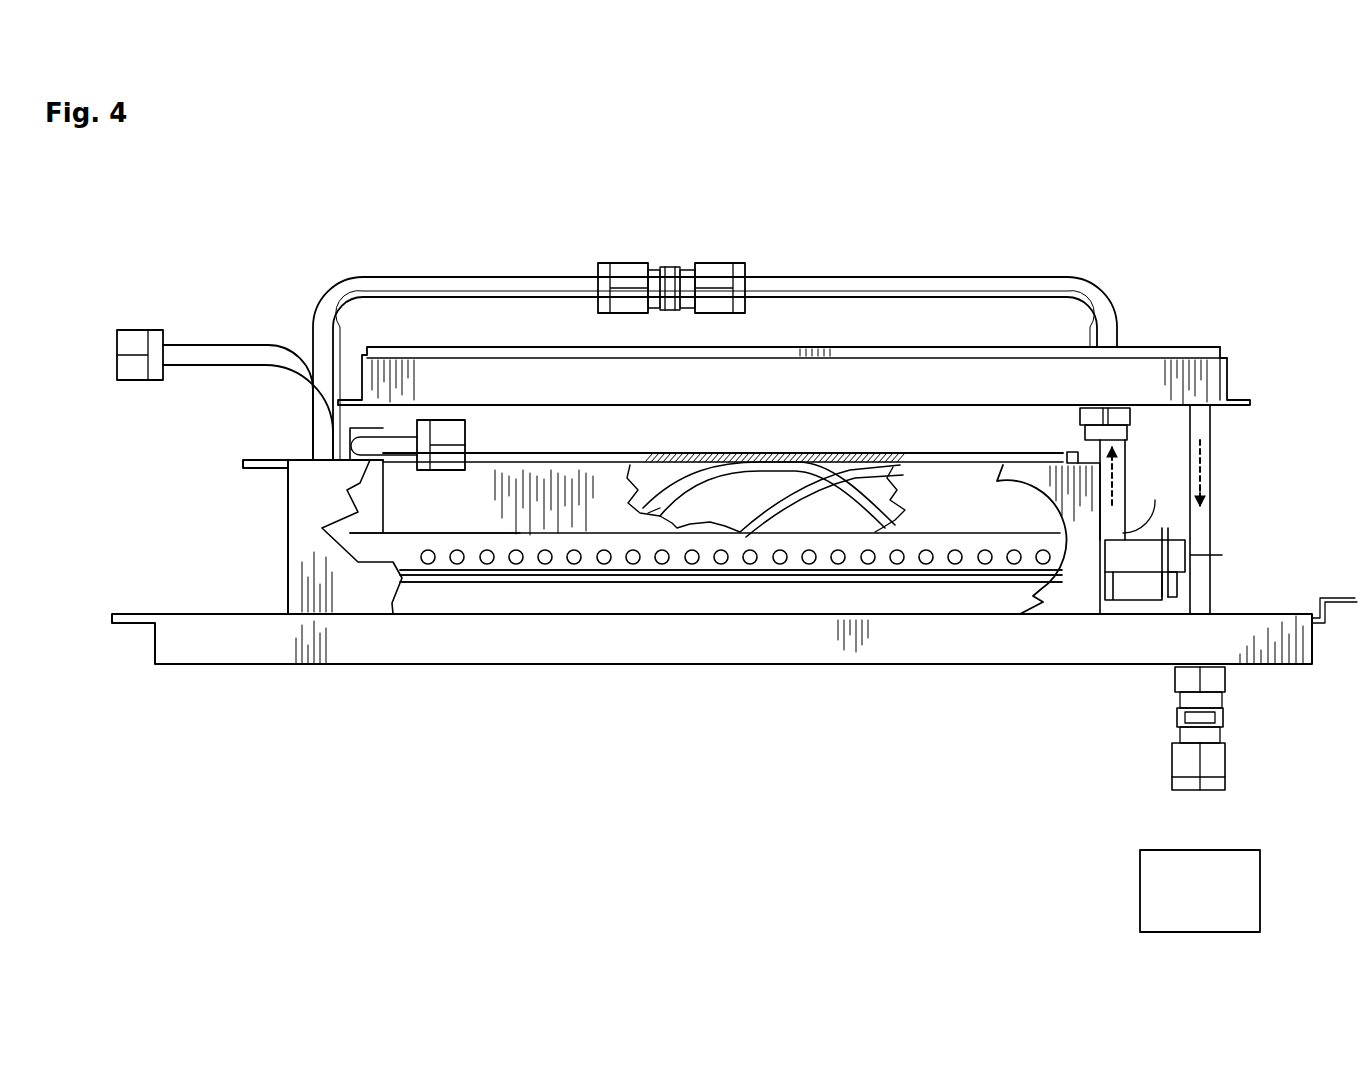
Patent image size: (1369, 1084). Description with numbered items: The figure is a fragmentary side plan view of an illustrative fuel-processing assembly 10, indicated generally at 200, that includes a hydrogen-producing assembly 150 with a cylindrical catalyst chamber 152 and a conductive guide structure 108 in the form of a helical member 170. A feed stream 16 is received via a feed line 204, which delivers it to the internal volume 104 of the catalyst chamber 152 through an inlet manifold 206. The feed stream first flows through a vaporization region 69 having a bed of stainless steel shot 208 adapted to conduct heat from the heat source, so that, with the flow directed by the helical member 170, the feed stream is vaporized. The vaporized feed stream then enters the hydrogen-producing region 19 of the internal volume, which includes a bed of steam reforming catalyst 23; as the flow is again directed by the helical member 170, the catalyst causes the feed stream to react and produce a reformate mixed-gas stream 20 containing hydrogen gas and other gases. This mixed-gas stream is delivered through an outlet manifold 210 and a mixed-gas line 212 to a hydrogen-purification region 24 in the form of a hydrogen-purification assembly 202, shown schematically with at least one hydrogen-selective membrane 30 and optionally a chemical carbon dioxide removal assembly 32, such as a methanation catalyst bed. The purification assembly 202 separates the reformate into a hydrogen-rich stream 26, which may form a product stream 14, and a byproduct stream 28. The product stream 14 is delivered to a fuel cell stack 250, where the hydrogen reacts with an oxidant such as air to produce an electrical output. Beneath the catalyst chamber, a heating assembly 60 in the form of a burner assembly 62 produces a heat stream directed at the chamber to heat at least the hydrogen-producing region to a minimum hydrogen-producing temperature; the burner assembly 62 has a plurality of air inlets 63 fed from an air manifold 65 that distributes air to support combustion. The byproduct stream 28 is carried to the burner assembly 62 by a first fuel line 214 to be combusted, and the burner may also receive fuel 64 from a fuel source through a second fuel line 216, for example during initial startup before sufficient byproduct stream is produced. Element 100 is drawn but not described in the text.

The fuel-processing assembly 10 is at (1155, 106).
The fuel-processing assembly 200 is at (1062, 136).
The heater assembly 100 is at (1018, 199).
The hydrogen-producing assembly 150 is at (938, 214).
The first fuel line 214 is at (497, 277).
The second fuel line 216 is at (227, 344).
The fuel 64 is at (108, 355).
The byproduct stream 28 is at (830, 289).
The hydrogen-selective membrane 30 is at (883, 372).
The hydrogen-purification assembly 202 is at (1137, 346).
The hydrogen-purification region 24 is at (1192, 340).
The chemical carbon dioxide removal assembly 32 is at (1212, 395).
The hydrogen-rich stream 26 is at (1212, 463).
The reformate mixed-gas stream 20 is at (1112, 472).
The mixed-gas line 212 is at (1084, 433).
The outlet manifold 210 is at (1142, 540).
The feed line 204 is at (397, 430).
The feed stream 16 is at (470, 438).
The cylindrical catalyst chamber 152 is at (766, 449).
The conductive guide structure 108 is at (787, 498).
The helical member 170 is at (763, 522).
The inlet manifold 206 is at (377, 535).
The vaporization region 69 is at (430, 518).
The bed of stainless steel shot 208 is at (471, 507).
The heating assembly 60 is at (612, 587).
The burner assembly 62 is at (690, 583).
The internal volume 104 is at (803, 524).
The air inlets 63 is at (840, 562).
The air manifold 65 is at (884, 576).
The hydrogen-producing region 19 is at (932, 518).
The bed of steam reforming catalyst 23 is at (988, 512).
The product stream 14 is at (1200, 848).
The fuel cell stack 250 is at (1226, 850).